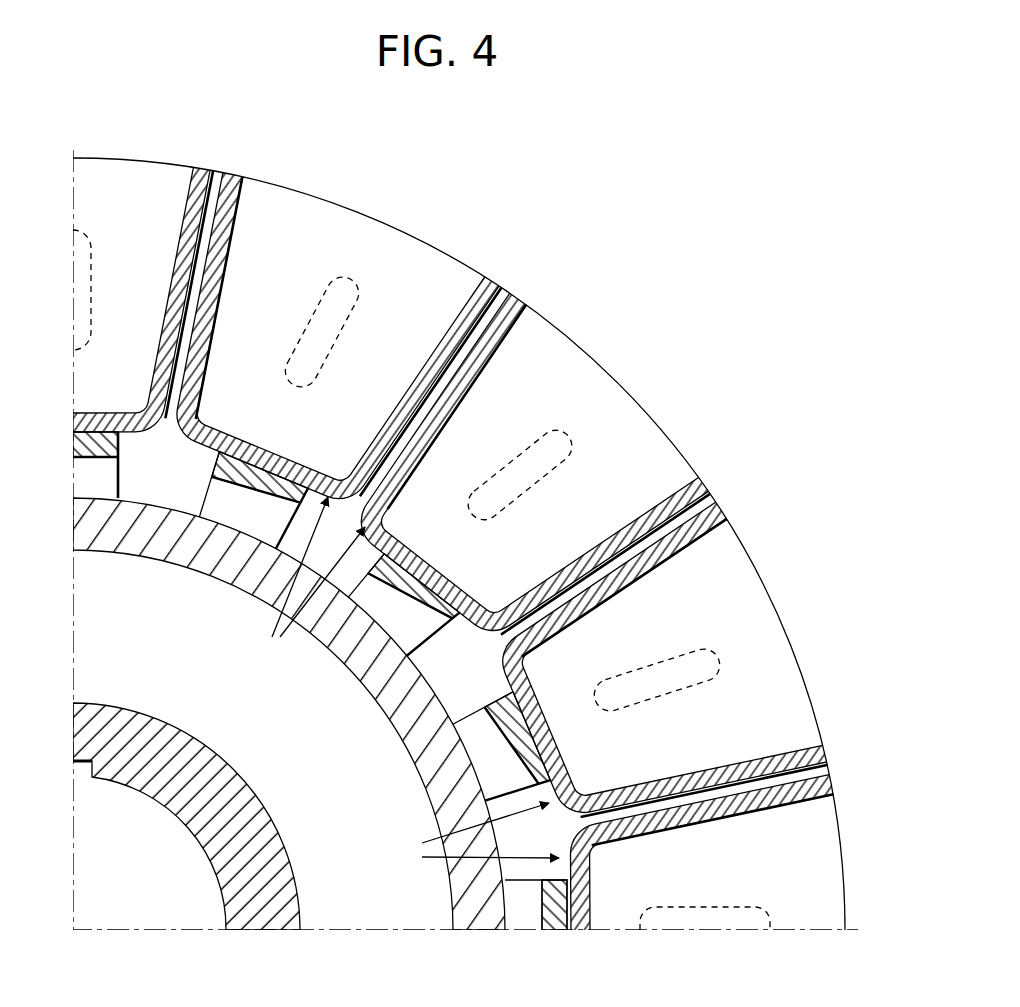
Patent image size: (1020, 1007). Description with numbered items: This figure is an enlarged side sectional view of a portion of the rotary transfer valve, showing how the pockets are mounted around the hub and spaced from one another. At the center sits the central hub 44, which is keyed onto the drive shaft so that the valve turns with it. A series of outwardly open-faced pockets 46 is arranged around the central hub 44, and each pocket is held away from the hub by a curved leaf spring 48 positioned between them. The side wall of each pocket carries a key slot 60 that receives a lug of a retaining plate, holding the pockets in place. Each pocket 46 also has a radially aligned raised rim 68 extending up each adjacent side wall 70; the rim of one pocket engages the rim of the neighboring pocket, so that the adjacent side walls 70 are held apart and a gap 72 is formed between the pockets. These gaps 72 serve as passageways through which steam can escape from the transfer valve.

The central hub 44 is at (420, 738).
The pocket 46 is at (406, 685).
The curved leaf spring 48 is at (110, 462).
The key slot 60 is at (350, 331).
The raised rim 68 is at (198, 210).
The side wall 70 is at (190, 178).
The gap 72 is at (218, 184).